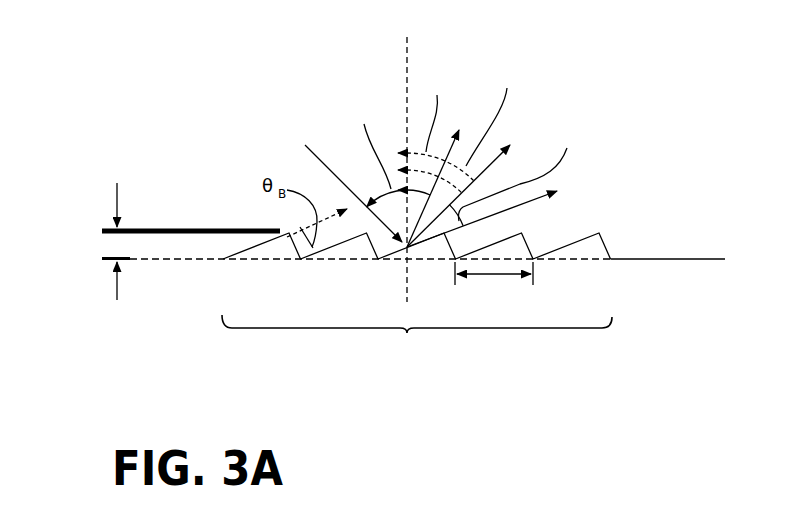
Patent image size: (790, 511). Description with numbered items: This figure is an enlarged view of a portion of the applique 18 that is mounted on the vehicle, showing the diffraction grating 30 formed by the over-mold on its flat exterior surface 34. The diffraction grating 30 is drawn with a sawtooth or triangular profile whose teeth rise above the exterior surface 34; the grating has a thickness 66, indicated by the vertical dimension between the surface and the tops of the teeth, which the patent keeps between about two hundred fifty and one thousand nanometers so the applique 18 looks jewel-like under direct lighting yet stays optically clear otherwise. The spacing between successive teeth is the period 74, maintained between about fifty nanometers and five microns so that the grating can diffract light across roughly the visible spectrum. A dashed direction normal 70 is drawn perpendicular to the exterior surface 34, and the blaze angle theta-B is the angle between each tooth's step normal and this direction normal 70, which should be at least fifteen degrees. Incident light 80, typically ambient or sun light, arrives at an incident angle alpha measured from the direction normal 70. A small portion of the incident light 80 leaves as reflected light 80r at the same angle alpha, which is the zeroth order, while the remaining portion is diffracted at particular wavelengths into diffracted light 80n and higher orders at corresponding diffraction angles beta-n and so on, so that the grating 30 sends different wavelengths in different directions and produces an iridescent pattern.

The applique 18 is at (650, 380).
The diffraction grating 30 is at (371, 300).
The exterior surface 34 is at (676, 258).
The thickness 66 is at (113, 202).
The direction normal 70 is at (406, 65).
The period 74 is at (480, 277).
The incident light 80 is at (360, 173).
The diffracted light 80n is at (443, 159).
The reflected light 80r is at (468, 157).